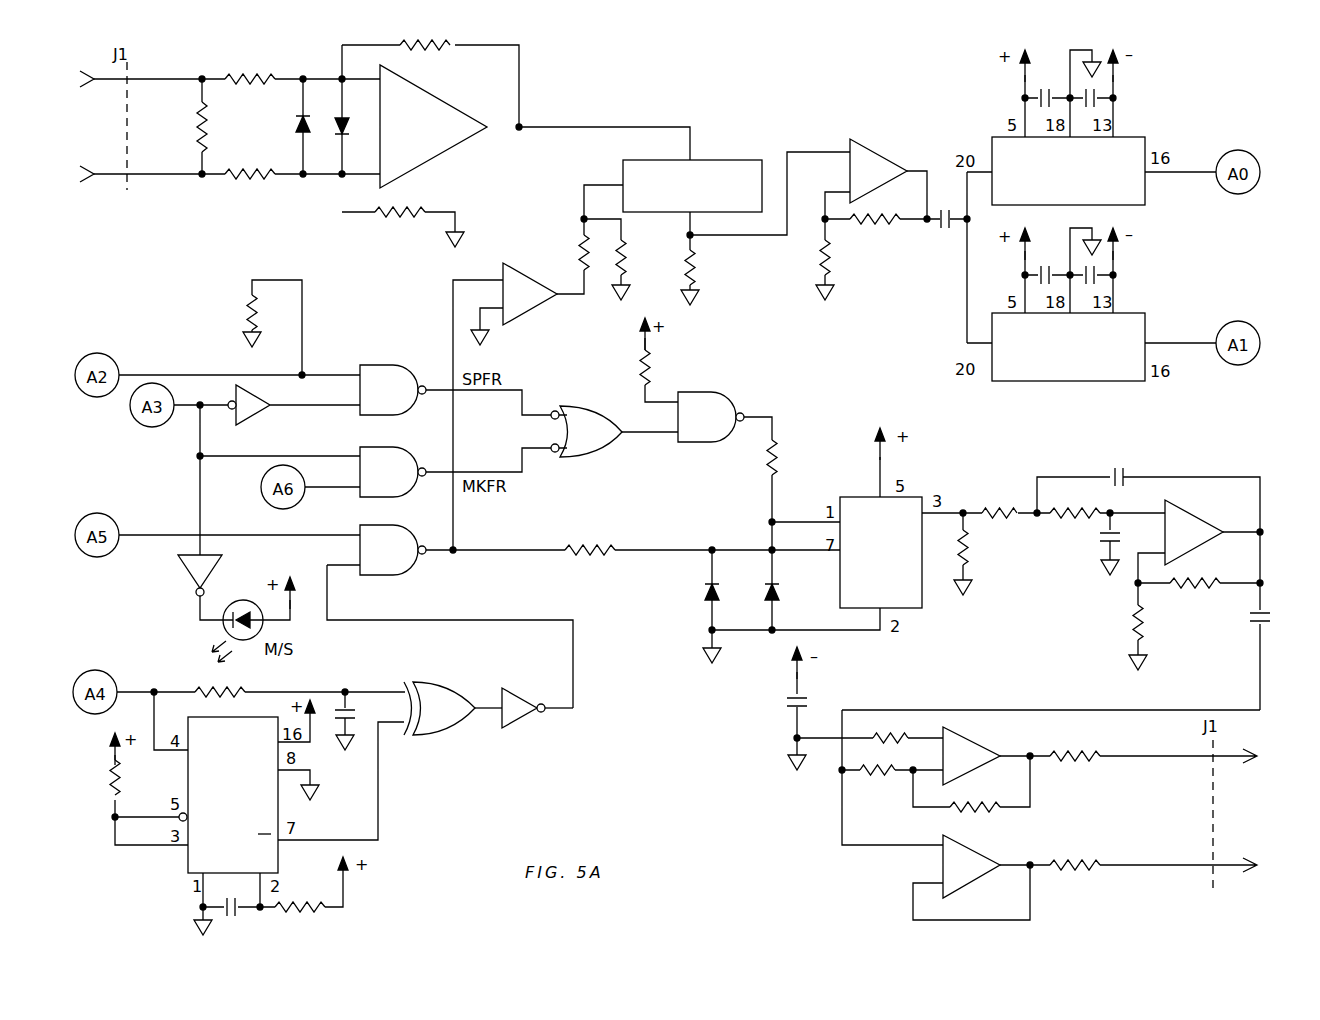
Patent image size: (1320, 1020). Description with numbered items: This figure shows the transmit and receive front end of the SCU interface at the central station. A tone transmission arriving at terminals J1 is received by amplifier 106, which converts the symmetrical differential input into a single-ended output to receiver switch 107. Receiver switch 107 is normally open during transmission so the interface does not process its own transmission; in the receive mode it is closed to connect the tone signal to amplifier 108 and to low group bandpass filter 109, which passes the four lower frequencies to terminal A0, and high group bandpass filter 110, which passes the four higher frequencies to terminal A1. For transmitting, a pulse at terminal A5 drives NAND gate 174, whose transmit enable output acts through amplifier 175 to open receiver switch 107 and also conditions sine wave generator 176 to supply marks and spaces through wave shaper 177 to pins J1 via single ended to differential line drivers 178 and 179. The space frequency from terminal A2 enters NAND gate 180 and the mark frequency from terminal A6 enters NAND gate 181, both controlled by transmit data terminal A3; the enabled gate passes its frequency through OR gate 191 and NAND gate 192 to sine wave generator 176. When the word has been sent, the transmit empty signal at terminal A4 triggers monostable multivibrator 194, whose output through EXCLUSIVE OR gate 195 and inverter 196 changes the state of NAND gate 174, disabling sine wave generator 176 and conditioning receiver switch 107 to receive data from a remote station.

The amplifier 106 is at (455, 148).
The receiver switch 107 is at (716, 160).
The amplifier 108 is at (878, 156).
The low group bandpass filter 109 is at (1128, 142).
The high group bandpass filter 110 is at (1128, 320).
The NAND gate 174 is at (392, 572).
The amplifier 175 is at (533, 288).
The sine wave generator 176 is at (864, 500).
The wave shaper 177 is at (1195, 522).
The single ended to differential line driver 178 is at (978, 752).
The single ended to differential line driver 179 is at (978, 858).
The NAND gate 180 is at (393, 374).
The NAND gate 181 is at (388, 458).
The OR gate 191 is at (592, 412).
The NAND gate 192 is at (704, 398).
The monostable multivibrator 194 is at (188, 857).
The EXCLUSIVE OR gate 195 is at (432, 730).
The inverter 196 is at (518, 725).